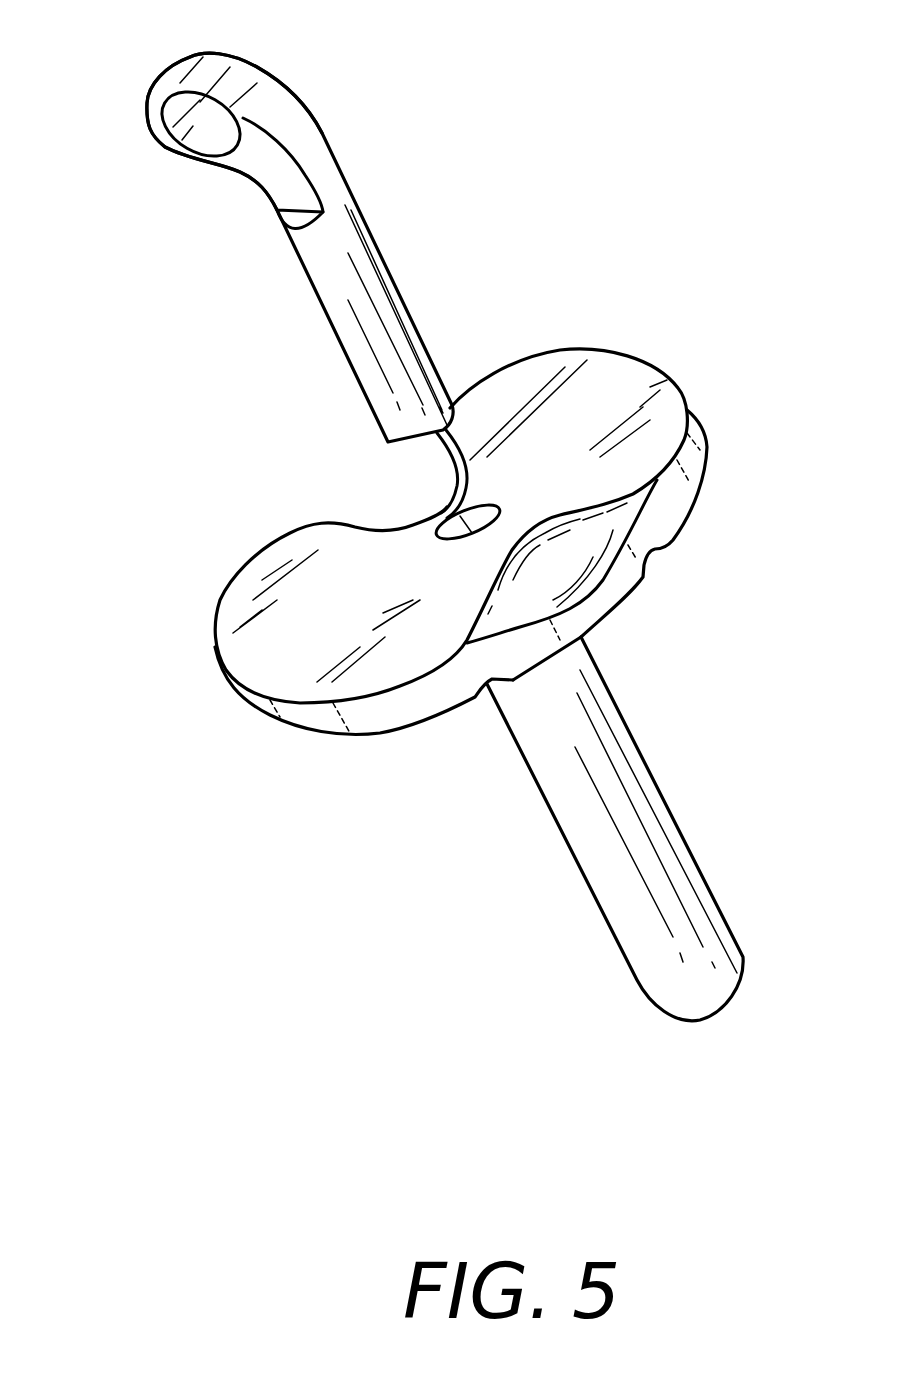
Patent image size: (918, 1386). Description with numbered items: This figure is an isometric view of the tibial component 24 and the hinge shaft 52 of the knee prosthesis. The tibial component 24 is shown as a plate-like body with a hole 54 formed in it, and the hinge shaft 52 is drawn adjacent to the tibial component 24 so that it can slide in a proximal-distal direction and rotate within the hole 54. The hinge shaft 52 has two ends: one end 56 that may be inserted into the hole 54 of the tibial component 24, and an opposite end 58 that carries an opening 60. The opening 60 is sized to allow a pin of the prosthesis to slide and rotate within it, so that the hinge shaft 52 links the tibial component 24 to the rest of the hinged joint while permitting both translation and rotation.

The tibial component 24 is at (637, 387).
The hinge shaft 52 is at (377, 308).
The hole 54 is at (443, 514).
The end 56 is at (422, 393).
The end 58 is at (177, 67).
The opening 60 is at (193, 127).